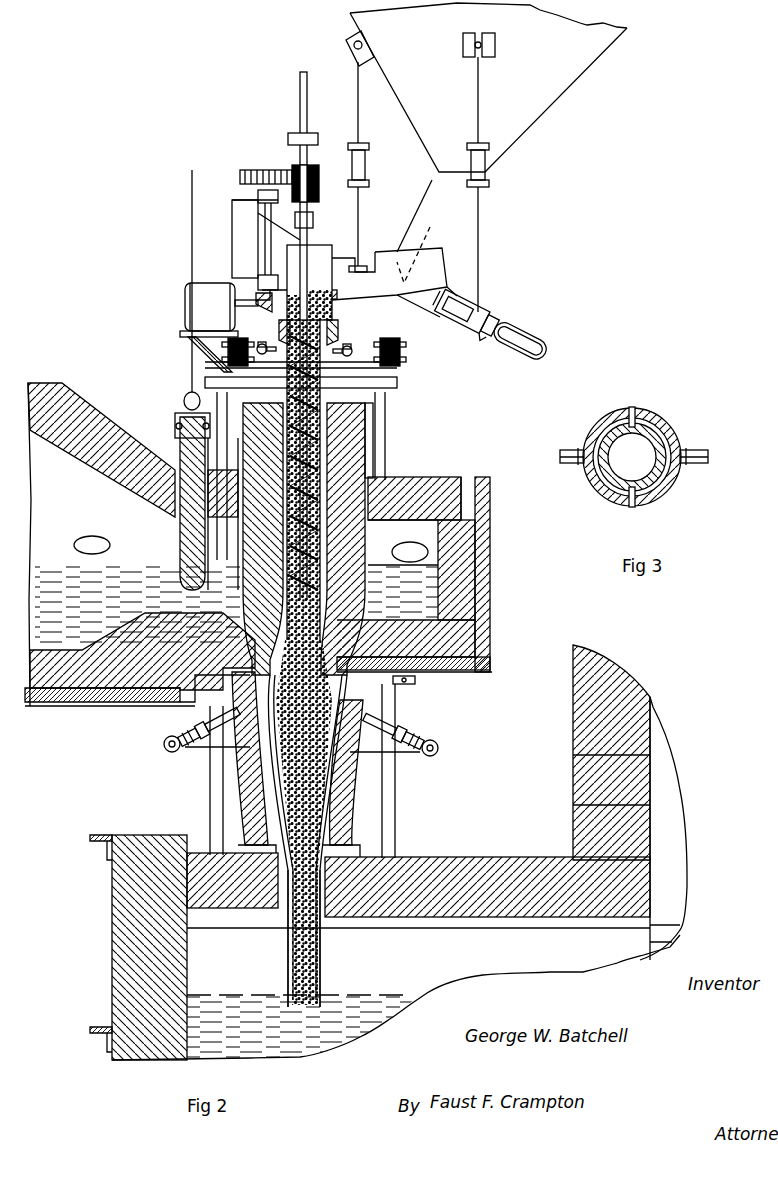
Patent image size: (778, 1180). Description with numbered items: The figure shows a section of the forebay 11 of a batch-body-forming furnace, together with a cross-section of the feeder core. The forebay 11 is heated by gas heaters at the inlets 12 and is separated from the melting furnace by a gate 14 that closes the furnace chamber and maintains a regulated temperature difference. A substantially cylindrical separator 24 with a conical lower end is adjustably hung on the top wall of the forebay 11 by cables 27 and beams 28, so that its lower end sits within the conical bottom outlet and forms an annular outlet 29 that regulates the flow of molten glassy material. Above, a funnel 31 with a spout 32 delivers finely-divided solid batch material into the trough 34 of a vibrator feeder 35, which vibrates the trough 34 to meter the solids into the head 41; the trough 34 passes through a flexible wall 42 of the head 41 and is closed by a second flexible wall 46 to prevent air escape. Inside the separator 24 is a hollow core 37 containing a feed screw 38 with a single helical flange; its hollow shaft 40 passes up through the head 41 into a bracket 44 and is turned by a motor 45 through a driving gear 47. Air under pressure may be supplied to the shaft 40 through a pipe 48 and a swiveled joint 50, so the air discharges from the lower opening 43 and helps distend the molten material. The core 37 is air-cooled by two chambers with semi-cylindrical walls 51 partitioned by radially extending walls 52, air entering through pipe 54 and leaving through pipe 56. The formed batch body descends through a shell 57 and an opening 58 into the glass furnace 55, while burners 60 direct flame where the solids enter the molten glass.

In FIG. 2, the forebay 11 is at (430, 540).
In FIG. 2, the inlets 12 is at (91, 536).
In FIG. 2, the gate 14 is at (180, 533).
In FIG. 2, the separator 24 is at (350, 452).
In FIG. 2, the cables 27 is at (255, 380).
In FIG. 2, the beams 28 is at (222, 343).
In FIG. 2, the annular outlet 29 is at (412, 682).
In FIG. 2, the funnel 31 is at (535, 92).
In FIG. 2, the spout 32 is at (425, 205).
In FIG. 2, the trough 34 is at (395, 297).
In FIG. 2, the vibrator feeder 35 is at (470, 312).
In FIG. 2, the hollow core 37 is at (334, 342).
In FIG. 3, the hollow core 37 is at (660, 420).
In FIG. 2, the feed screw 38 is at (300, 425).
In FIG. 2, the hollow shaft 40 is at (312, 246).
In FIG. 2, the head 41 is at (286, 270).
In FIG. 2, the flexible wall 42 is at (347, 262).
In FIG. 2, the opening 43 is at (316, 700).
In FIG. 2, the bracket 44 is at (252, 222).
In FIG. 2, the motor 45 is at (207, 300).
In FIG. 2, the flexible wall 46 is at (432, 252).
In FIG. 2, the driving gear 47 is at (292, 170).
In FIG. 2, the pipe 48 is at (299, 110).
In FIG. 2, the swiveled joint 50 is at (290, 137).
In FIG. 3, the semi-cylindrical walls 51 is at (665, 435).
In FIG. 3, the radially extending walls 52 is at (634, 410).
In FIG. 2, the pipe 54 is at (262, 343).
In FIG. 3, the pipe 54 is at (568, 449).
In FIG. 2, the furnace 55 is at (603, 785).
In FIG. 2, the pipe 56 is at (347, 346).
In FIG. 3, the pipe 56 is at (702, 463).
In FIG. 2, the shell 57 is at (350, 791).
In FIG. 2, the opening 58 is at (322, 905).
In FIG. 2, the burners 60 is at (172, 753).